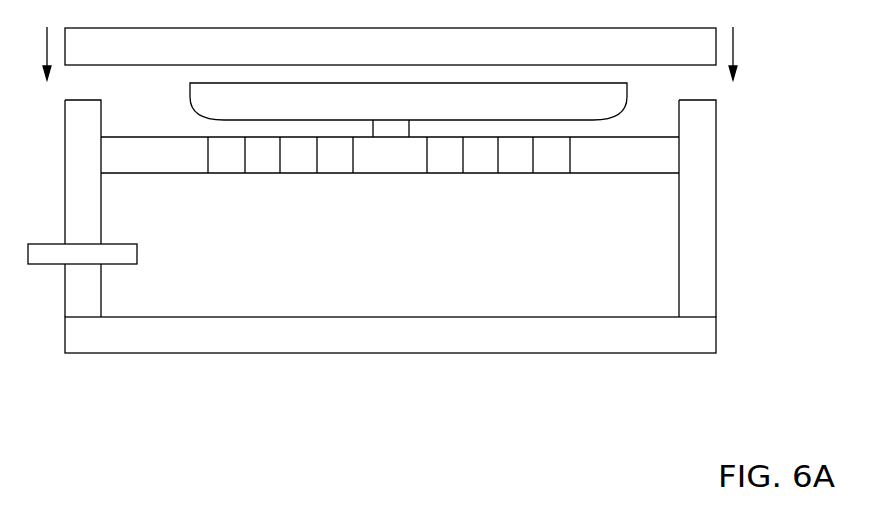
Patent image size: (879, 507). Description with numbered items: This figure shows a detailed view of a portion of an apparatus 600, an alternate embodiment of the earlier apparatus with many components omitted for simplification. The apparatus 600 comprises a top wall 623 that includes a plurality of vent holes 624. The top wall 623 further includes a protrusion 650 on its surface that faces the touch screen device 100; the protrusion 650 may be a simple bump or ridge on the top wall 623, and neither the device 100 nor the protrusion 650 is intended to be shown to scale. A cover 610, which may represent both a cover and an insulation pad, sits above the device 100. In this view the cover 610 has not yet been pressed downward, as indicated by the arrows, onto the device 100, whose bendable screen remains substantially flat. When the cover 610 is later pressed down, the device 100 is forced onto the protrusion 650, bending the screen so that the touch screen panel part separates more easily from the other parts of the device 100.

The apparatus 600 is at (179, 386).
The cover 610 is at (390, 46).
The touch screen device 100 is at (408, 101).
The top wall 623 is at (625, 173).
The vent holes 624 is at (280, 163).
The protrusion 650 is at (393, 127).